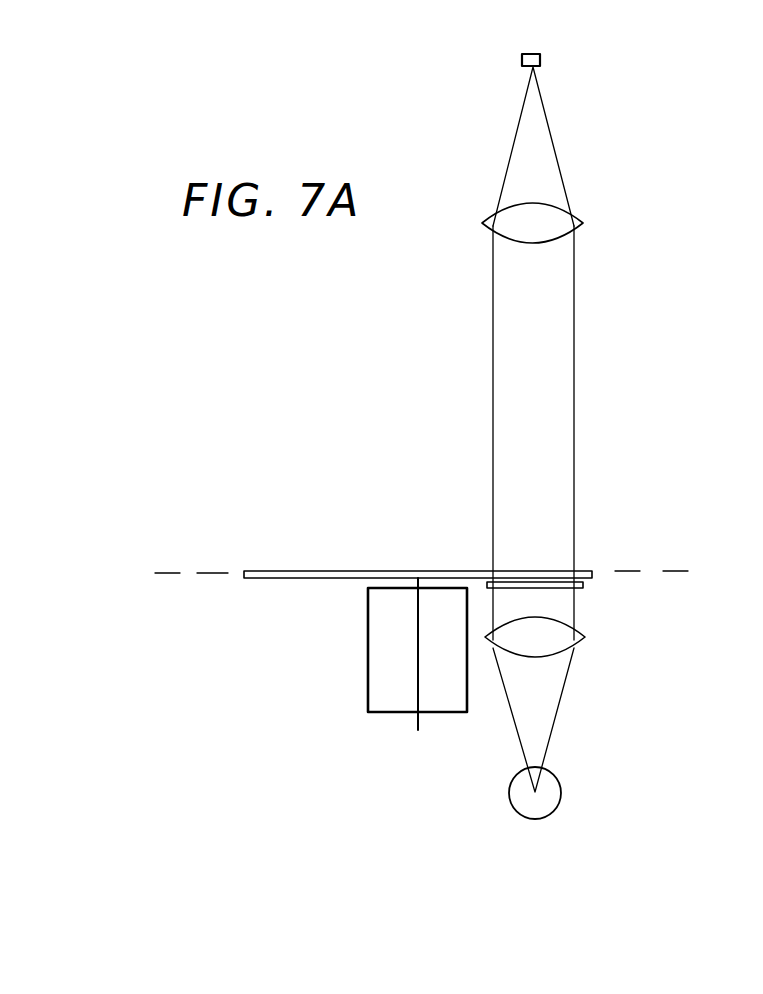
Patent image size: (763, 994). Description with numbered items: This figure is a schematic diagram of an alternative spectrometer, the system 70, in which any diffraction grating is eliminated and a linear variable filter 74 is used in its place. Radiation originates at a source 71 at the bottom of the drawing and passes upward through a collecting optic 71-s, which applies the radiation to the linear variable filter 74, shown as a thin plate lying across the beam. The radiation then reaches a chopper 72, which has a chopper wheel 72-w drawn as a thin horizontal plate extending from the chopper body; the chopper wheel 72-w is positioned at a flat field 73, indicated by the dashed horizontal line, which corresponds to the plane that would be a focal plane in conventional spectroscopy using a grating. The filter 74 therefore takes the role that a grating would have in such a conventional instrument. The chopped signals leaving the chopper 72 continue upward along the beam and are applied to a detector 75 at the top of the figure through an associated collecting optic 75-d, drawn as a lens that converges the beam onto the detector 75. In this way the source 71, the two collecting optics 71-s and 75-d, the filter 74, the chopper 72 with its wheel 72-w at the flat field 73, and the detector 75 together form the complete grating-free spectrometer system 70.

The system 70 is at (367, 407).
The source 71 is at (510, 806).
The collecting optic 71-s is at (583, 637).
The chopper 72 is at (373, 673).
The chopper wheel 72-w is at (318, 571).
The flat field 73 is at (187, 577).
The linear variable filter 74 is at (529, 582).
The detector 75 is at (522, 59).
The collecting optic 75-d is at (585, 223).